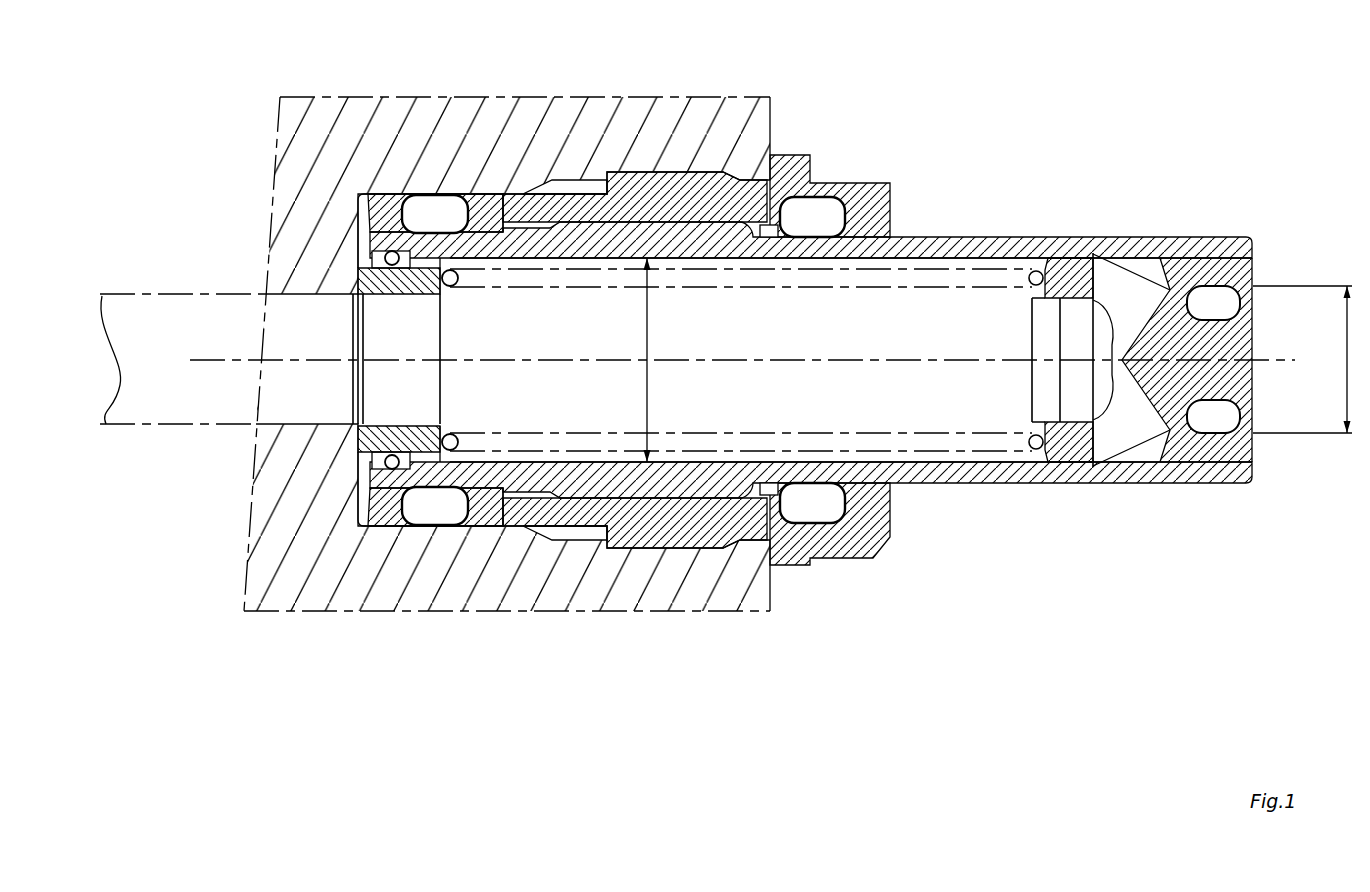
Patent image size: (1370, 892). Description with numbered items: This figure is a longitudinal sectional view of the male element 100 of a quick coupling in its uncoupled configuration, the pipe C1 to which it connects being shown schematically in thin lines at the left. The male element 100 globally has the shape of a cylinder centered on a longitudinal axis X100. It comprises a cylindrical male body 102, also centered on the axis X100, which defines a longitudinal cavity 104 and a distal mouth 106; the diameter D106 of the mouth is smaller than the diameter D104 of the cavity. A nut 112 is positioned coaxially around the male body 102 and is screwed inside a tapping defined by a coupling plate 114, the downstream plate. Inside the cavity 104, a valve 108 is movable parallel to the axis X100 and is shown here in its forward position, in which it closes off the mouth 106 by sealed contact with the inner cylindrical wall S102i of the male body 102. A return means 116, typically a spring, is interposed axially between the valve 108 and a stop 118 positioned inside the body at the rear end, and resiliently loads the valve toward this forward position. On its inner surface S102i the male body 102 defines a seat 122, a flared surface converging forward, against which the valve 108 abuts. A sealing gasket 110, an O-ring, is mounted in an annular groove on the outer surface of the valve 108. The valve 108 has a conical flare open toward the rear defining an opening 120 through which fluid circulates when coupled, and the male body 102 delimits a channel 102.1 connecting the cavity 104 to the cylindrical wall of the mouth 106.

The male element 100 is at (1065, 182).
The male body 102 is at (978, 237).
The channel 102.1 is at (1115, 272).
The cavity 104 is at (803, 258).
The distal mouth 106 is at (1173, 423).
The valve 108 is at (1250, 338).
The sealing gasket 110 is at (1203, 300).
The nut 112 is at (862, 543).
The coupling plate 114 is at (458, 590).
The return means 116 is at (505, 440).
The stop 118 is at (357, 432).
The opening 120 is at (1096, 316).
The seat 122 is at (1072, 398).
The inner cylindrical wall S102i is at (987, 460).
The diameter of the cavity D104 is at (638, 360).
The diameter of the mouth D106 is at (1302, 359).
The longitudinal axis X100 is at (716, 361).
The pipe C1 is at (155, 308).